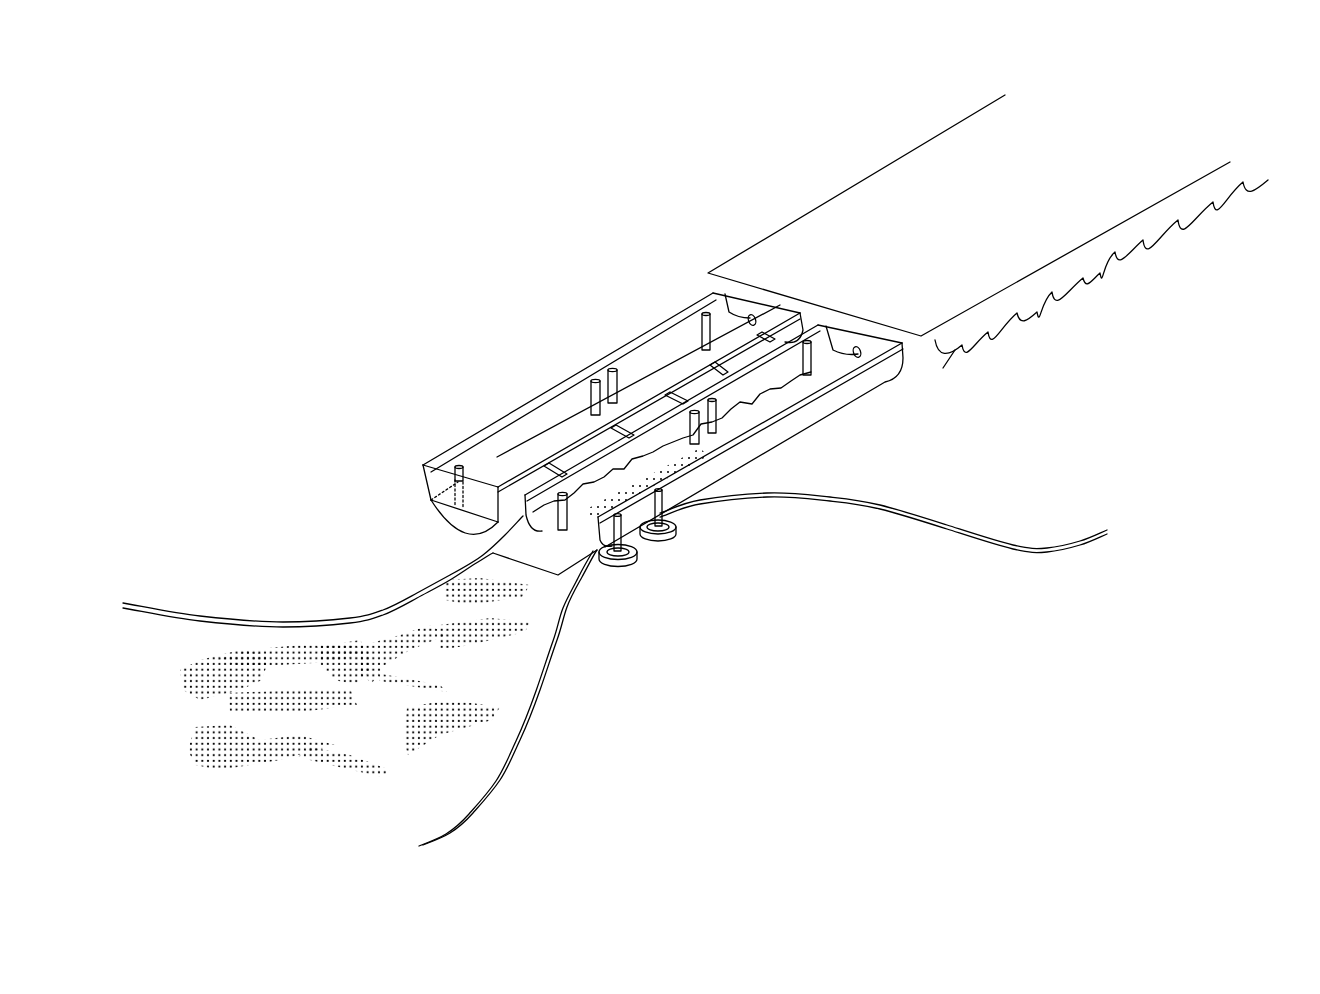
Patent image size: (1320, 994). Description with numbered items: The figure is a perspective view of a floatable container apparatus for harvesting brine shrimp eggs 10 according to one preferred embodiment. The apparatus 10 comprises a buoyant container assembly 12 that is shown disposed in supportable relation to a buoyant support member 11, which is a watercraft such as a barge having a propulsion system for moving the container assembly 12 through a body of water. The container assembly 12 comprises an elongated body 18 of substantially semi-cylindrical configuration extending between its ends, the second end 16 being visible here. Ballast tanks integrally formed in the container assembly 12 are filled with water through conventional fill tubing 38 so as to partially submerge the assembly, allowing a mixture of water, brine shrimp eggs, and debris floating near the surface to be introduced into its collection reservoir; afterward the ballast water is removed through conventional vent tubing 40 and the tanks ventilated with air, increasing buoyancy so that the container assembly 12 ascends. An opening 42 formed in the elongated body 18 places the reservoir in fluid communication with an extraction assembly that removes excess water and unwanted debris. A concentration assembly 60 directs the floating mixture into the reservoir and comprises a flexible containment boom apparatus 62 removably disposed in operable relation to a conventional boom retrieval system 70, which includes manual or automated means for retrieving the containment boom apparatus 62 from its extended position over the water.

The floatable container apparatus for harvesting brine shrimp eggs 10 is at (480, 125).
The buoyant support member 11 is at (922, 253).
The container assembly 12 is at (637, 453).
The second end 16 is at (415, 483).
The elongated body 18 is at (858, 397).
The fill tubing 38 is at (594, 378).
The vent tubing 40 is at (457, 465).
The opening 42 is at (711, 298).
The concentration assembly 60 is at (615, 669).
The flexible containment boom apparatus 62 is at (560, 617).
The boom retrieval system 70 is at (670, 545).